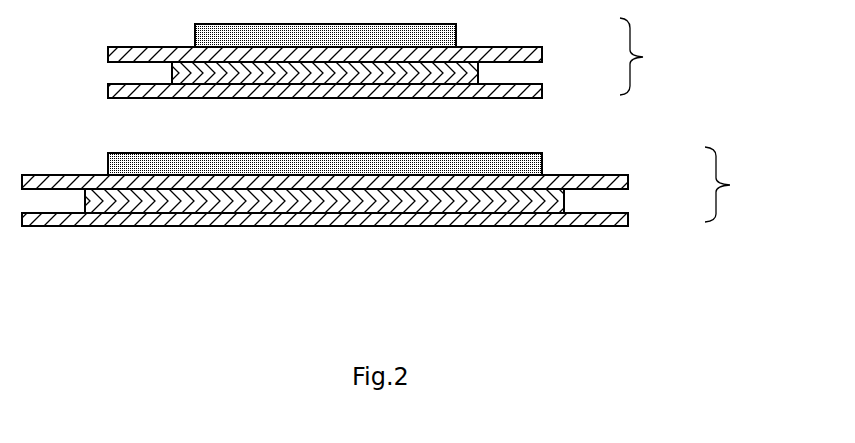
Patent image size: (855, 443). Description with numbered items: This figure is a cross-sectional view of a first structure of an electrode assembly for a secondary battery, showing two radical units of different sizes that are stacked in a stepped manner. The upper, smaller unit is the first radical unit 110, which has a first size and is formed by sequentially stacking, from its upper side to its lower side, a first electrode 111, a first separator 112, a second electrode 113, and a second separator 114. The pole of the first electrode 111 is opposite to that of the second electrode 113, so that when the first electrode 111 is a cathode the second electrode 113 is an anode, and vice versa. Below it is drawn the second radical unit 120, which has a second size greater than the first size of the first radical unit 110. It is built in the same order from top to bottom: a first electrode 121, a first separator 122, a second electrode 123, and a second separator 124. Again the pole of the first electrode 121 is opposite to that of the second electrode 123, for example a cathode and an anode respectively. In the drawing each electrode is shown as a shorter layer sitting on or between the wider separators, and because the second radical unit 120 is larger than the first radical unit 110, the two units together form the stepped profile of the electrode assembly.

The first radical unit 110 is at (651, 56).
The first electrode 111 is at (456, 29).
The first separator 112 is at (537, 54).
The second electrode 113 is at (480, 69).
The second separator 114 is at (537, 90).
The second radical unit 120 is at (736, 184).
The first electrode 121 is at (539, 162).
The first separator 122 is at (618, 180).
The second electrode 123 is at (560, 202).
The second separator 124 is at (618, 219).